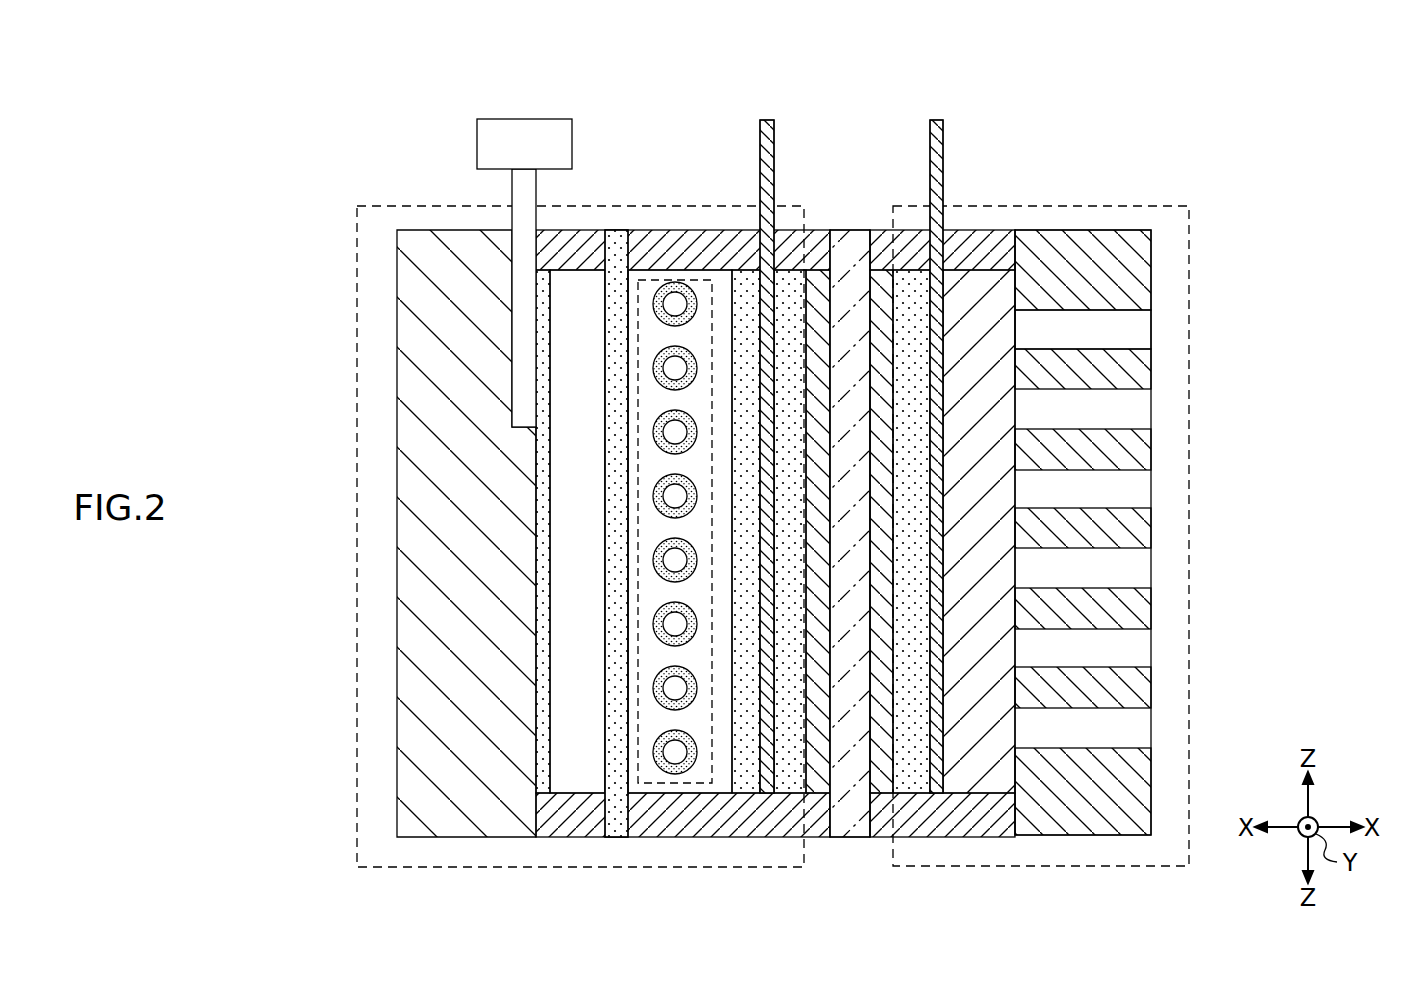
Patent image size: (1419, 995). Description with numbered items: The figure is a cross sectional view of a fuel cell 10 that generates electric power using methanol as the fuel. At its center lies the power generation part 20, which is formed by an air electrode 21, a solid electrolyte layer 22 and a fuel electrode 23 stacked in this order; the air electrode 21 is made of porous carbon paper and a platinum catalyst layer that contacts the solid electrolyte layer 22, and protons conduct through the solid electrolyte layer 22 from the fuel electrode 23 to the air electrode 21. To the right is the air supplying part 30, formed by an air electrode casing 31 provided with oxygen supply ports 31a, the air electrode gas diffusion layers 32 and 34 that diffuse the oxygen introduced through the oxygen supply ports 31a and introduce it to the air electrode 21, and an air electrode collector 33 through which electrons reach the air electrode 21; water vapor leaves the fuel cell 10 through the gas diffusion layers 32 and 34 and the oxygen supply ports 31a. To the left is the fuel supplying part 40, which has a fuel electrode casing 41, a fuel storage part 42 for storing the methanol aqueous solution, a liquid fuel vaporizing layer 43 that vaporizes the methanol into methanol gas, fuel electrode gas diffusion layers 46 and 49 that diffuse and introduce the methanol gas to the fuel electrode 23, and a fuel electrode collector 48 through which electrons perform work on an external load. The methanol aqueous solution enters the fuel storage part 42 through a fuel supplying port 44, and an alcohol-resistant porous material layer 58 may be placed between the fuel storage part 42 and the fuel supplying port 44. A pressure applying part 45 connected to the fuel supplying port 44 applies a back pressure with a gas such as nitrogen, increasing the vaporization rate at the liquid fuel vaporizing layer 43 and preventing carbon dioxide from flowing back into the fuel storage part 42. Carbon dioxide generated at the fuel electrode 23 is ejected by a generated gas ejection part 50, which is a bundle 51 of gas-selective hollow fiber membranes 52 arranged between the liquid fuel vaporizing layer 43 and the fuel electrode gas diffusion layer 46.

The fuel cell 10 is at (388, 93).
The power generation part 20 is at (859, 590).
The air electrode 21 is at (895, 792).
The solid electrolyte layer 22 is at (850, 838).
The fuel electrode 23 is at (810, 790).
The air supplying part 30 is at (1189, 568).
The air electrode casing 31 is at (1152, 268).
The oxygen supply ports 31a is at (1152, 330).
The air electrode gas diffusion layer 32 is at (1008, 767).
The air electrode collector 33 is at (936, 118).
The air electrode gas diffusion layer 34 is at (923, 777).
The fuel supplying part 40 is at (358, 678).
The fuel electrode casing 41 is at (397, 393).
The fuel storage part 42 is at (578, 497).
The liquid fuel vaporizing layer 43 is at (622, 556).
The fuel supplying port 44 is at (518, 196).
The pressure applying part 45 is at (522, 118).
The fuel electrode gas diffusion layer 46 is at (748, 783).
The fuel electrode collector 48 is at (766, 118).
The fuel electrode gas diffusion layer 49 is at (787, 783).
The generated gas ejection part 50 is at (676, 539).
The hollow fiber membrane bundle 51 is at (645, 803).
The hollow fiber membranes 52 is at (655, 298).
The porous material layer 58 is at (540, 800).